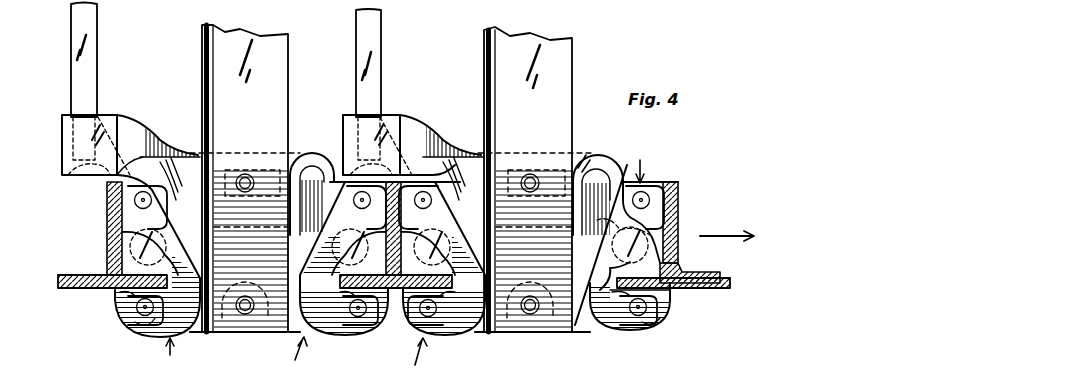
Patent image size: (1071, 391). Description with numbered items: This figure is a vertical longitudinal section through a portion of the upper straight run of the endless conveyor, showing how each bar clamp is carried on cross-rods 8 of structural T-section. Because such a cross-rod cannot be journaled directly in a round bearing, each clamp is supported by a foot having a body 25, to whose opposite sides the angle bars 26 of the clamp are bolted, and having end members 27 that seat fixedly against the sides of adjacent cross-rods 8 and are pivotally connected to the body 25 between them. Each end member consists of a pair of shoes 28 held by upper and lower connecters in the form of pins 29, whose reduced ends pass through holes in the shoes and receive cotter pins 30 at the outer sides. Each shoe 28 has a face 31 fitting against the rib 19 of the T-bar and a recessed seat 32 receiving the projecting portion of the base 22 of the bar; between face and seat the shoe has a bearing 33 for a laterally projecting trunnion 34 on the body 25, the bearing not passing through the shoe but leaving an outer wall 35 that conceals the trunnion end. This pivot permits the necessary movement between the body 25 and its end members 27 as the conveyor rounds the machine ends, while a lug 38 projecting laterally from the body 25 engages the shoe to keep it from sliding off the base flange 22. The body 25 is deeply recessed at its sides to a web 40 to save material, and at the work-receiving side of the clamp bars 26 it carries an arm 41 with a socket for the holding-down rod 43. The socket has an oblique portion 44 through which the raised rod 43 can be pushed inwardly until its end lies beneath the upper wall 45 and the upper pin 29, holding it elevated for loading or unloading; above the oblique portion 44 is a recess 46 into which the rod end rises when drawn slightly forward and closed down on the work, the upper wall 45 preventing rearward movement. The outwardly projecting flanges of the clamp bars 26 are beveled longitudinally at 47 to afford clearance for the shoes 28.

The cross-rod 8 is at (105, 238).
The rib 19 is at (108, 222).
The base 22 is at (66, 290).
The body 25 is at (603, 153).
The angle bars 26 is at (288, 97).
The end members 27 is at (402, 258).
The shoes 28 is at (640, 332).
The pins 29 is at (155, 337).
The cotter pins 30 is at (134, 200).
The face 31 is at (680, 215).
The recessed seat 32 is at (125, 300).
The bearing 33 is at (680, 238).
The trunnion 34 is at (107, 262).
The outer wall 35 is at (110, 250).
The lug 38 is at (393, 230).
The web 40 is at (290, 215).
The arm 41 is at (62, 155).
The holding-down rod 43 is at (97, 80).
The oblique portion 44 is at (130, 150).
The upper wall 45 is at (75, 180).
The recess 46 is at (64, 168).
The bevel 47 is at (222, 153).